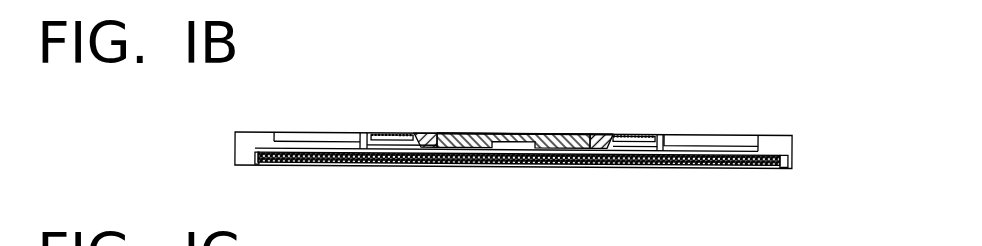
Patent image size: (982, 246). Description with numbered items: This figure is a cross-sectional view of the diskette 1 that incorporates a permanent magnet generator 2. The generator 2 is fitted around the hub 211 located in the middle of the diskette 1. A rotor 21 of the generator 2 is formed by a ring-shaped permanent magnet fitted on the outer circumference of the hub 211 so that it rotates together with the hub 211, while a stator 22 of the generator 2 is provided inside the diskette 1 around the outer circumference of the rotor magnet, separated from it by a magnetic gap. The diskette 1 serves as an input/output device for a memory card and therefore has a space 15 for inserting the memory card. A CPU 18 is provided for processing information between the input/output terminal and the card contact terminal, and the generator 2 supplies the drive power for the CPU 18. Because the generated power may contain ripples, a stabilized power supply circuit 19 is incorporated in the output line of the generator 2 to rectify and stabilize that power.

The diskette 1 is at (778, 133).
The permanent magnet generator 2 is at (638, 133).
The space 15 is at (724, 168).
The CPU 18 is at (701, 140).
The stabilized power supply circuit 19 is at (308, 138).
The rotor 21 is at (604, 131).
The stator 22 is at (392, 130).
The hub 211 is at (557, 134).